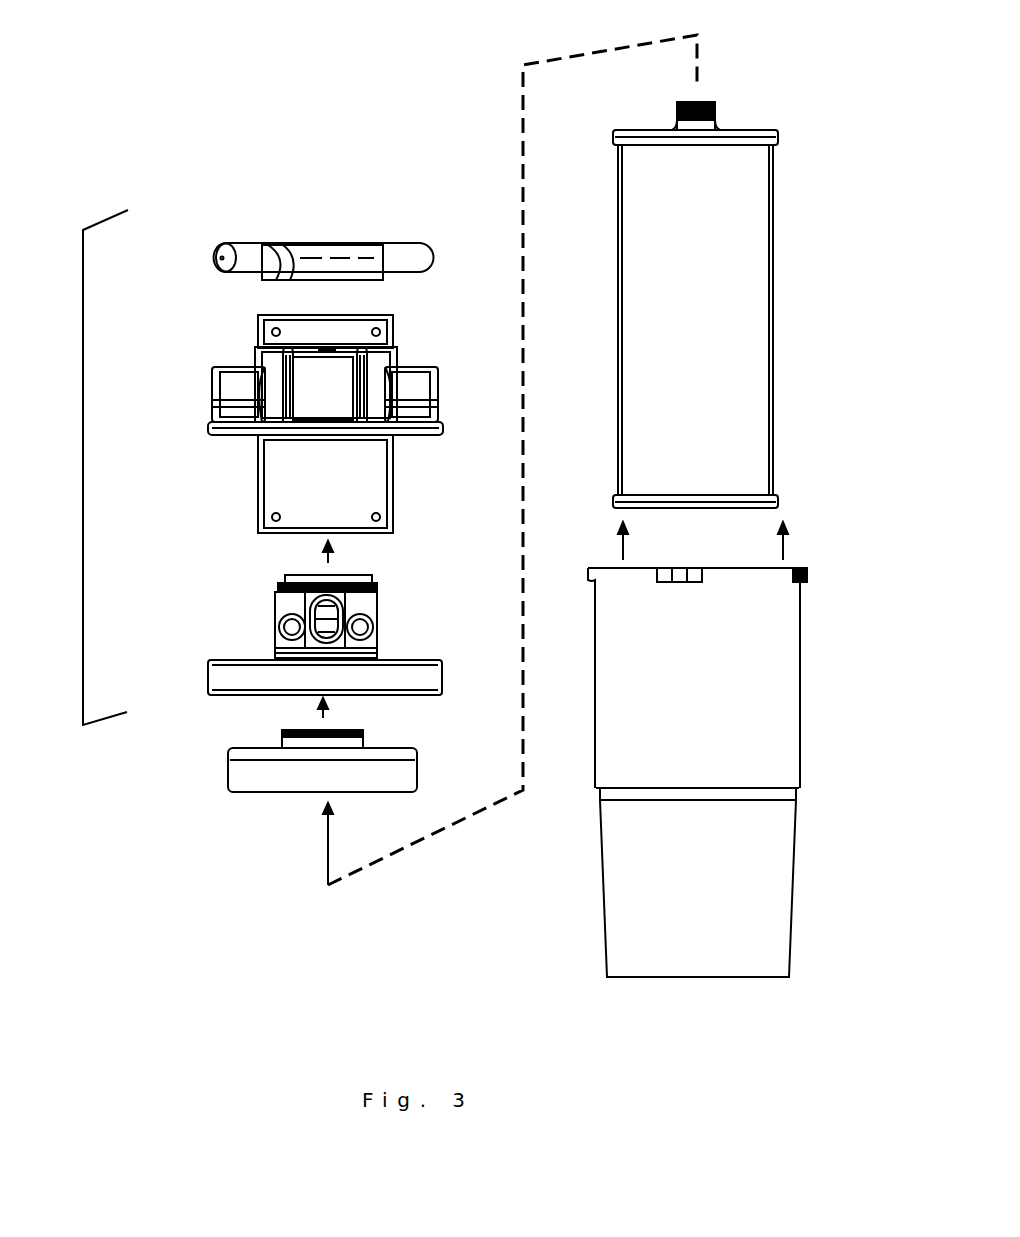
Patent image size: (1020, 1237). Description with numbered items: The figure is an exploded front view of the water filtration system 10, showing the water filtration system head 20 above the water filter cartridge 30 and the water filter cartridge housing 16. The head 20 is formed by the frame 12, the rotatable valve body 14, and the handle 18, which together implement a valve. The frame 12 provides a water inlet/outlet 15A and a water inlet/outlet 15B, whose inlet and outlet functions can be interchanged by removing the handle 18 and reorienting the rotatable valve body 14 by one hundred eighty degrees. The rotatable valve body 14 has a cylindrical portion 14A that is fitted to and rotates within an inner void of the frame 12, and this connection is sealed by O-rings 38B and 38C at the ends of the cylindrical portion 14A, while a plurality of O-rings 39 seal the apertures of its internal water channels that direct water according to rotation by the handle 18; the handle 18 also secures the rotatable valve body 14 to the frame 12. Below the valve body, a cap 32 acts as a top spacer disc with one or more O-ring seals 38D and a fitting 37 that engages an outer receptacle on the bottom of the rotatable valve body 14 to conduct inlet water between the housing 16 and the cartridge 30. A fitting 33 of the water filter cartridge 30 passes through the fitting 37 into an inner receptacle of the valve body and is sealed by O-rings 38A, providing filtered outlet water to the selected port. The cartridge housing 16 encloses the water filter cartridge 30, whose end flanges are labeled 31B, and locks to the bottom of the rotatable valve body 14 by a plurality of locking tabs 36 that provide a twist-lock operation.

The water filtration system 10 is at (222, 111).
The water filtration system head 20 is at (83, 455).
The handle 18 is at (403, 243).
The frame 12 is at (420, 365).
The water inlet/outlet 15A is at (217, 400).
The water inlet/outlet 15B is at (438, 398).
The cylindrical portion 14A is at (275, 605).
The O-rings 39 is at (273, 613).
The O-ring 38C is at (378, 590).
The O-ring 38B is at (378, 650).
The rotatable valve body 14 is at (437, 660).
The O-ring seals 38D is at (363, 733).
The fitting 37 is at (282, 742).
The cap 32 is at (395, 750).
The water filter cartridge 30 is at (722, 321).
The end cap flange 31B is at (778, 136).
The fitting 33 is at (715, 124).
The O-rings 38A is at (677, 116).
The water filter cartridge housing 16 is at (800, 680).
The locking tabs 36 is at (672, 582).